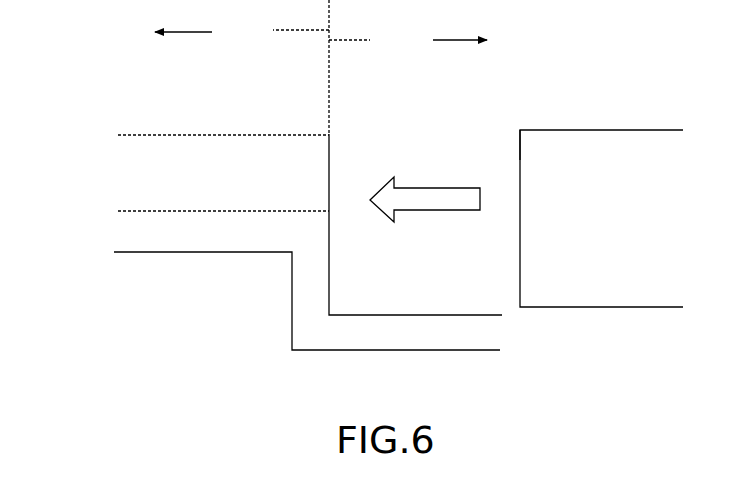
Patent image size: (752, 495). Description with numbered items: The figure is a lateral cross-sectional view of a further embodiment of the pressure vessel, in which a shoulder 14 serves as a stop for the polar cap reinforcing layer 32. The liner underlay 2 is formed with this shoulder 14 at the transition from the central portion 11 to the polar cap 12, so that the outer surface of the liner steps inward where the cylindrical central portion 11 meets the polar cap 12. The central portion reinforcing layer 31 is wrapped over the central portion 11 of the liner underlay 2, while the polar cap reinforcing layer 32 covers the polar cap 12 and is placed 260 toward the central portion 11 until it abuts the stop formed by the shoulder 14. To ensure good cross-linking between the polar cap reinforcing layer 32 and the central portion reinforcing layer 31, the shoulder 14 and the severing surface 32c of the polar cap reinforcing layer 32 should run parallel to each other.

The liner underlay 2 is at (310, 333).
The central portion 11 is at (242, 33).
The polar cap 12 is at (408, 41).
The shoulder 14 is at (334, 272).
The central portion reinforcing layer 31 is at (150, 173).
The polar cap reinforcing layer 32 is at (614, 215).
The severing surface 32c is at (514, 150).
The placing 260 is at (435, 184).